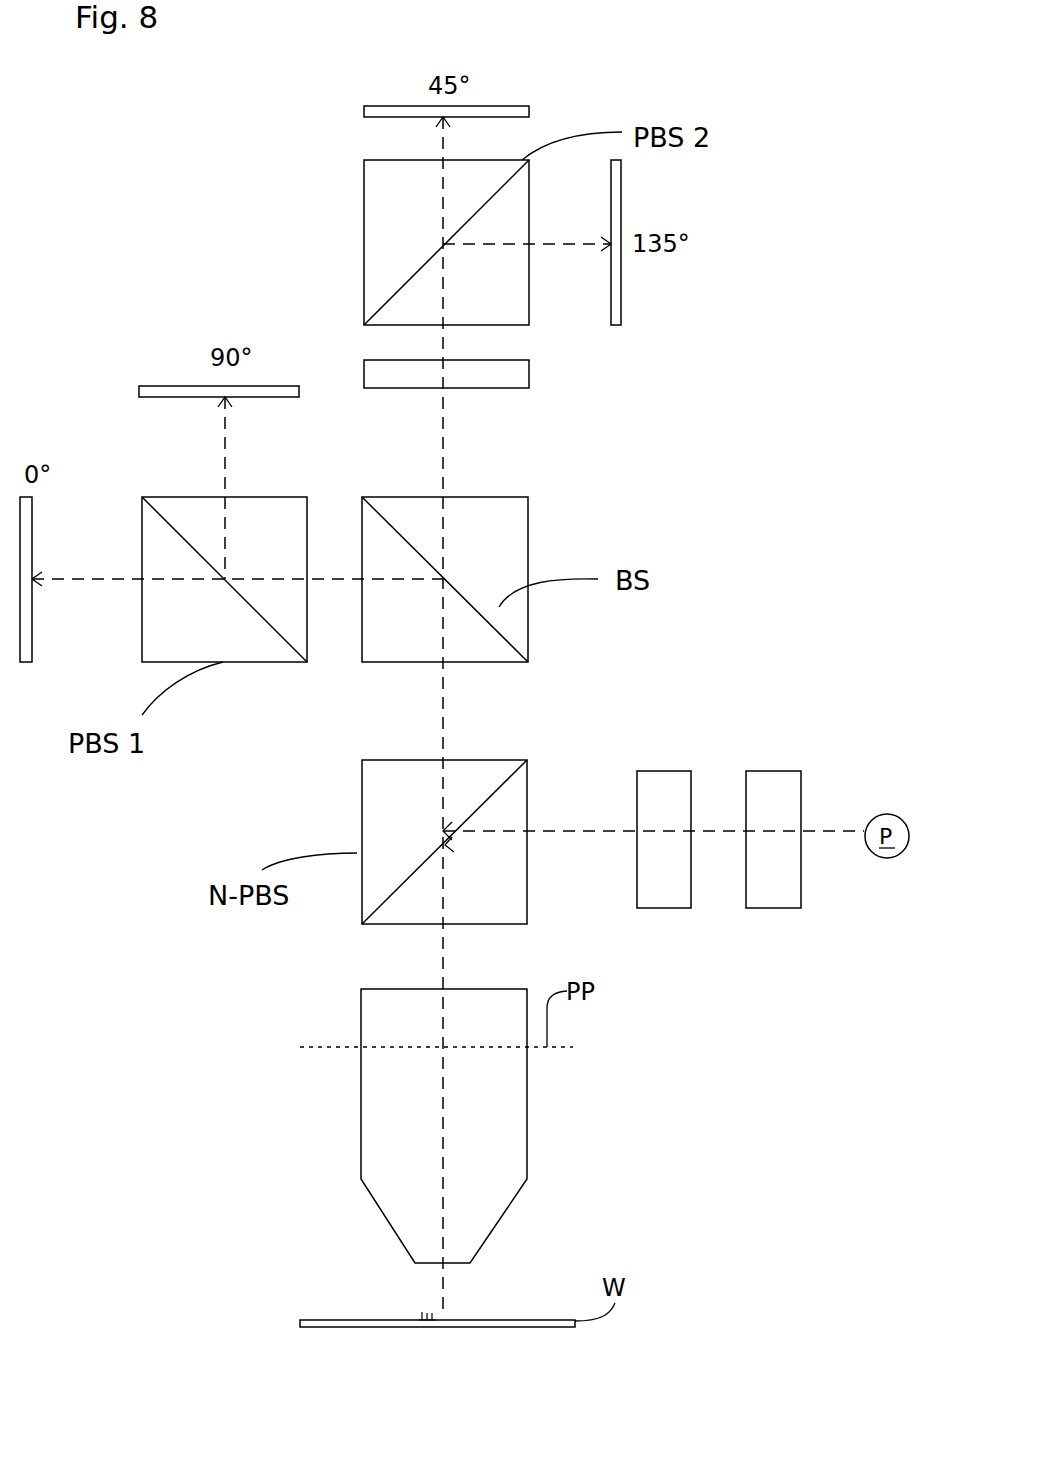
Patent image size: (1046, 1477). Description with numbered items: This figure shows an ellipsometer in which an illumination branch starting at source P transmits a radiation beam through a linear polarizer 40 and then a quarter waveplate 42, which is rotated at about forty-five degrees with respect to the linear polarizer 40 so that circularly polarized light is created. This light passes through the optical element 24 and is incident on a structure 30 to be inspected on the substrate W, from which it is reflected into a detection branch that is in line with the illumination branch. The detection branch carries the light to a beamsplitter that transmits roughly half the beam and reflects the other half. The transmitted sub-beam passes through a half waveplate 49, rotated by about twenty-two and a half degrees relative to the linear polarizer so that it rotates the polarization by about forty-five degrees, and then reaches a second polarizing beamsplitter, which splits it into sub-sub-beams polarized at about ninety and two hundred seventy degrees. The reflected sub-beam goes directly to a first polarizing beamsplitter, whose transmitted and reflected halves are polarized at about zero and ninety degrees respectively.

The half waveplate 49 is at (459, 385).
The quarter waveplate 42 is at (678, 848).
The linear polarizer 40 is at (788, 822).
The objective lens 24 is at (522, 1117).
The structure 30 is at (435, 1325).